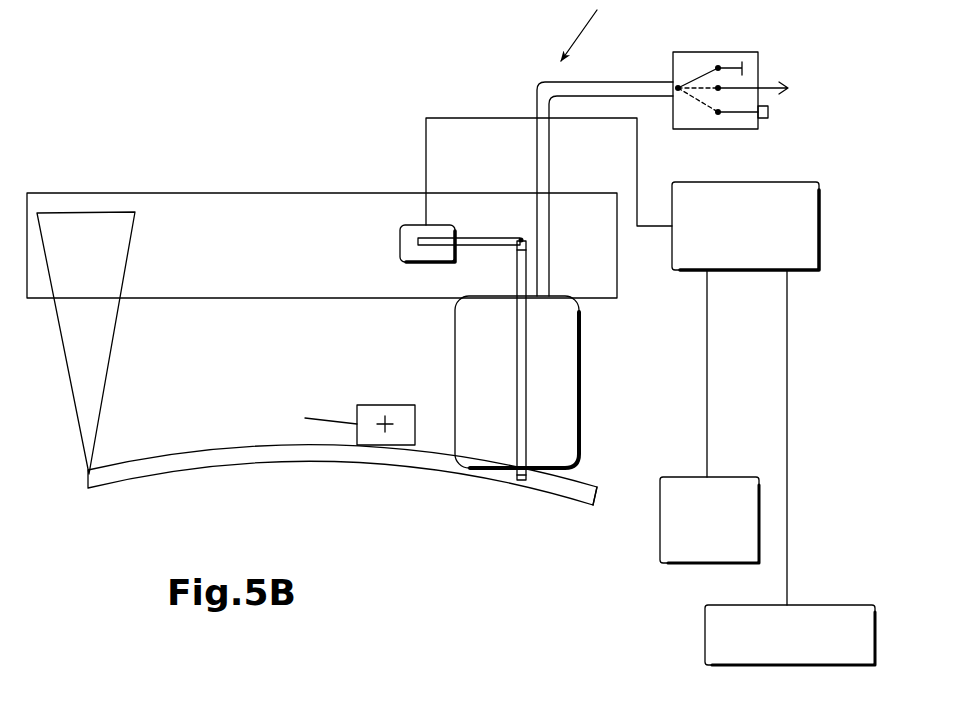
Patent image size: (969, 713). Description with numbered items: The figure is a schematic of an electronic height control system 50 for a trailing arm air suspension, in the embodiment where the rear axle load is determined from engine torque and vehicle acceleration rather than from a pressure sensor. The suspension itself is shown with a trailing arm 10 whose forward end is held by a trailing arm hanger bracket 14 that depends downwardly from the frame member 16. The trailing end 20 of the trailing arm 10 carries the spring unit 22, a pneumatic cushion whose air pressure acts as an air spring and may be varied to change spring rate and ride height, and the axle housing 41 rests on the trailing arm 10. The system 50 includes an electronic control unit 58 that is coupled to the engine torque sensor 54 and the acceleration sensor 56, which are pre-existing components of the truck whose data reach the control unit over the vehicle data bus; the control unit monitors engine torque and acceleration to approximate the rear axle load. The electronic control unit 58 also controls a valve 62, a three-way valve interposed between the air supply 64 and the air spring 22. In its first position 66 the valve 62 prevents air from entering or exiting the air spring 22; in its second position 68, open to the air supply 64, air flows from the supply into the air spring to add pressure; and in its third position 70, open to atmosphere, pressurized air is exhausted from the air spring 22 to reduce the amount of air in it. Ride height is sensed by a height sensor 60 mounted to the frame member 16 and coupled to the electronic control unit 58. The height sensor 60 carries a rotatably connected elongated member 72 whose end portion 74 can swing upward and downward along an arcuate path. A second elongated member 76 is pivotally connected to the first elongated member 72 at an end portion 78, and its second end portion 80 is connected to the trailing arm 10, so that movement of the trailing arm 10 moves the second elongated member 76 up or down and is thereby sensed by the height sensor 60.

The trailing arm 10 is at (153, 451).
The trailing arm hanger bracket 14 is at (57, 361).
The frame member 16 is at (257, 267).
The trailing end 20 is at (566, 490).
The spring unit 22 is at (553, 392).
The axle housing 41 is at (367, 406).
The system 50 is at (587, 30).
The engine torque sensor 54 is at (660, 555).
The acceleration sensor 56 is at (715, 646).
The electronic control unit 58 is at (804, 250).
The height sensor 60 is at (408, 234).
The valve 62 is at (752, 52).
The air supply 64 is at (804, 89).
The first position 66 is at (703, 72).
The second position 68 is at (695, 81).
The third position 70 is at (699, 104).
The elongated member 72 is at (481, 243).
The end portion 74 is at (533, 240).
The second elongated member 76 is at (524, 357).
The end portion 78 is at (520, 258).
The second end portion 80 is at (523, 452).